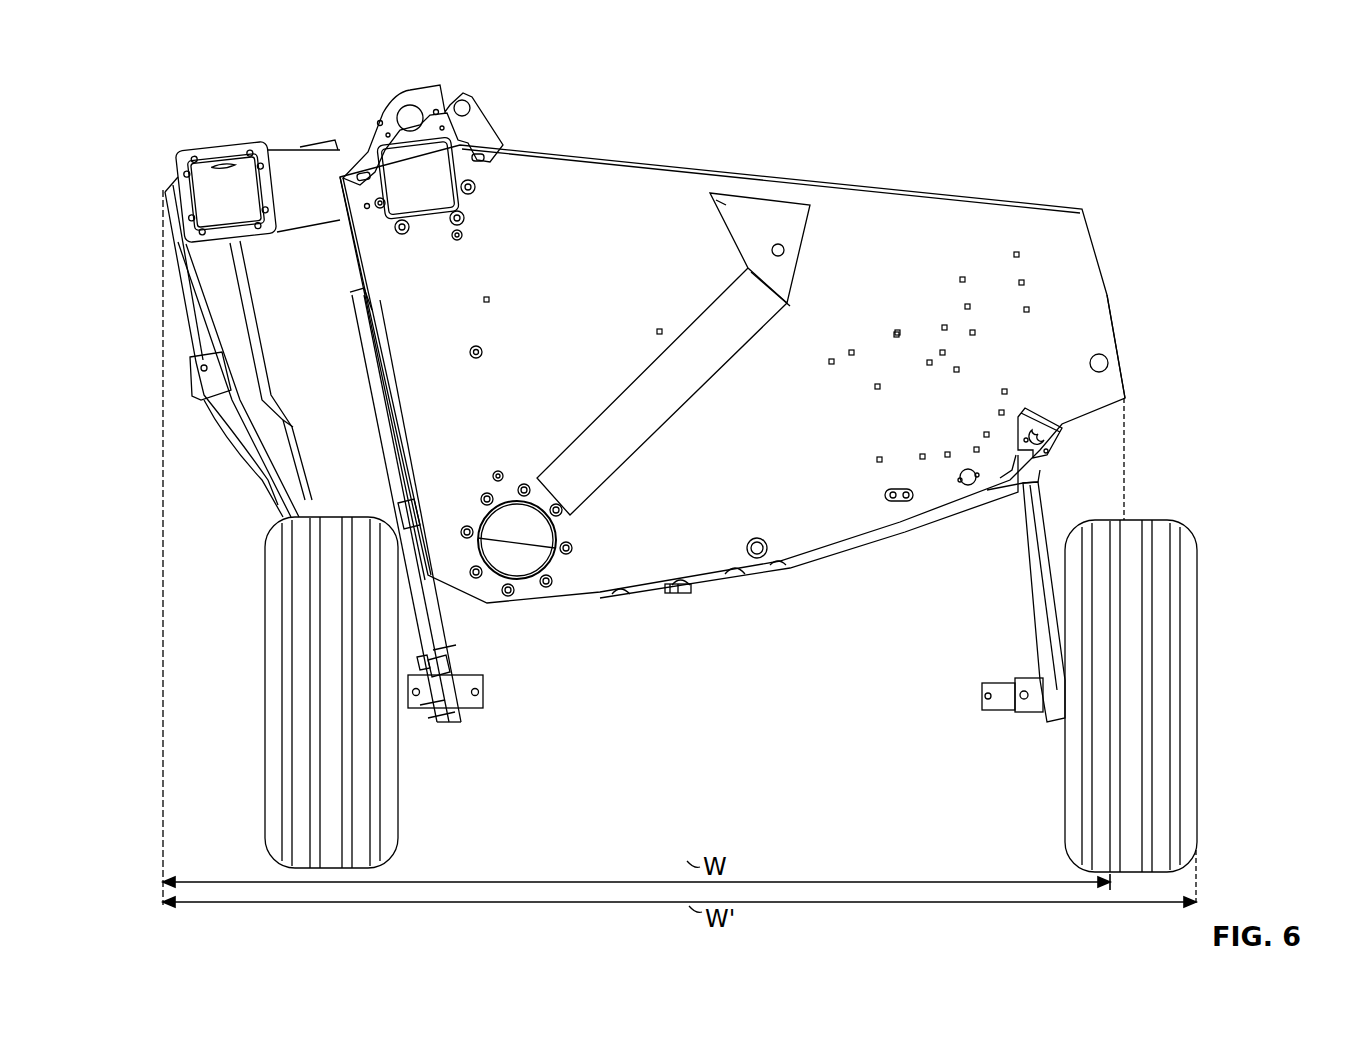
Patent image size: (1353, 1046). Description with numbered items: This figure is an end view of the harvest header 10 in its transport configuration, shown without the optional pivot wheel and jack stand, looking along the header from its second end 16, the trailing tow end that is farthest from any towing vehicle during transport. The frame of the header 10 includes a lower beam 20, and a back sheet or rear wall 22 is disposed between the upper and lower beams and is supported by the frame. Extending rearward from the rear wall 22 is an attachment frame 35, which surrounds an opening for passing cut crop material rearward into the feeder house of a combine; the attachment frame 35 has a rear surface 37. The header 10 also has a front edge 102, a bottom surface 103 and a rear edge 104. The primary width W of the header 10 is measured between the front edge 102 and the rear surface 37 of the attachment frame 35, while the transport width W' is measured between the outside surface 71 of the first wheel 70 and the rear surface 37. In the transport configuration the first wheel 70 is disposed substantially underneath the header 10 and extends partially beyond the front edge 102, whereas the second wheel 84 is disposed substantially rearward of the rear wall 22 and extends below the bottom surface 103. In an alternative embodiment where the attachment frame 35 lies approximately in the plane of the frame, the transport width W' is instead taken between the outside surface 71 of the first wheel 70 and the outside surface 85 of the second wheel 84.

The harvest header 10 is at (960, 128).
The second end 16 is at (995, 212).
The lower beam 20 is at (522, 572).
The rear wall 22 is at (342, 254).
The attachment frame 35 is at (225, 138).
The rear surface 37 is at (163, 193).
The first wheel 70 is at (1160, 522).
The outside surface 71 is at (1197, 570).
The second wheel 84 is at (265, 548).
The outside surface 85 is at (265, 700).
The front edge 102 is at (1126, 380).
The bottom surface 103 is at (703, 580).
The rear edge 104 is at (408, 512).